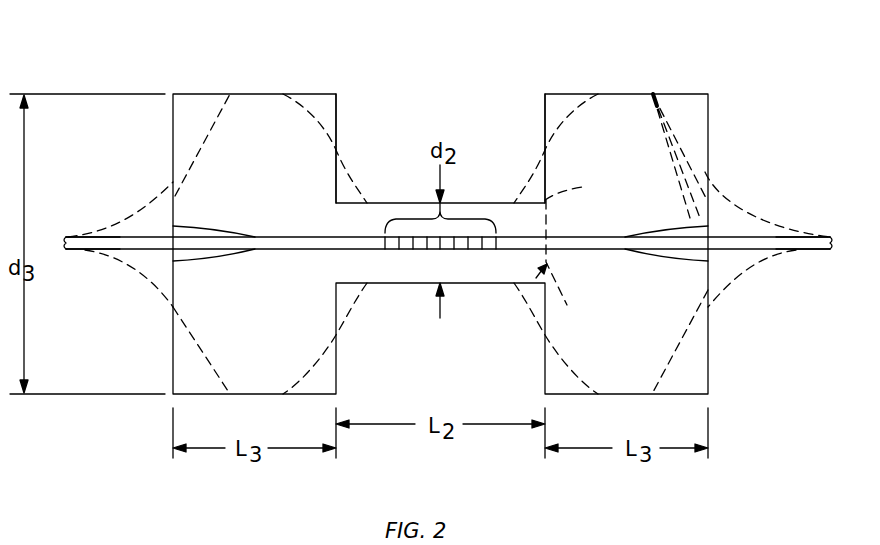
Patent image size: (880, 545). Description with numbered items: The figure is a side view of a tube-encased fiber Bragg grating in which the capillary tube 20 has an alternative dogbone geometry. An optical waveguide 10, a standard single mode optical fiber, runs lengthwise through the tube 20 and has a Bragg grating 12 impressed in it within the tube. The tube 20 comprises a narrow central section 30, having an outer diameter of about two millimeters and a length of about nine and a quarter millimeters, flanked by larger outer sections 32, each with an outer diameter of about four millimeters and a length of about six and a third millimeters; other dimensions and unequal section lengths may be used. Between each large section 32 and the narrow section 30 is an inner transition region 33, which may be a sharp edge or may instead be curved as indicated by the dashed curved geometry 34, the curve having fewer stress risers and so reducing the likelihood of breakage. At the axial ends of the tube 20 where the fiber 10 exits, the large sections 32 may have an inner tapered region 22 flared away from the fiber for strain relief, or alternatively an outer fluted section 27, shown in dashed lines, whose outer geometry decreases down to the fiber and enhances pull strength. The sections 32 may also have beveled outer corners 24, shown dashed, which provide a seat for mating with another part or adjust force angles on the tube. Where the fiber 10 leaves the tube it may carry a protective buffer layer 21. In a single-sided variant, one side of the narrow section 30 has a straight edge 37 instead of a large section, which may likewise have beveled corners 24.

The optical waveguide 10 is at (296, 236).
The Bragg grating 12 is at (440, 204).
The capillary tube 20 is at (305, 87).
The buffer layer 21 is at (72, 237).
The inner tapered region 22 is at (212, 226).
The beveled outer corners 24 is at (208, 128).
The outer fluted section 27 is at (152, 195).
The narrow central section 30 is at (402, 205).
The larger outer sections 32 is at (277, 193).
The inner transition region 33 is at (336, 121).
The curved geometry 34 is at (322, 130).
The straight edge 37 is at (550, 262).